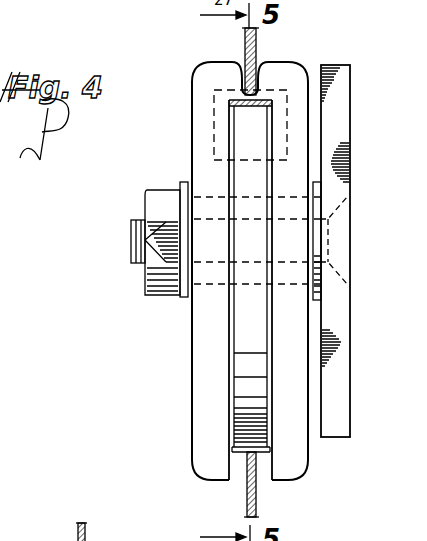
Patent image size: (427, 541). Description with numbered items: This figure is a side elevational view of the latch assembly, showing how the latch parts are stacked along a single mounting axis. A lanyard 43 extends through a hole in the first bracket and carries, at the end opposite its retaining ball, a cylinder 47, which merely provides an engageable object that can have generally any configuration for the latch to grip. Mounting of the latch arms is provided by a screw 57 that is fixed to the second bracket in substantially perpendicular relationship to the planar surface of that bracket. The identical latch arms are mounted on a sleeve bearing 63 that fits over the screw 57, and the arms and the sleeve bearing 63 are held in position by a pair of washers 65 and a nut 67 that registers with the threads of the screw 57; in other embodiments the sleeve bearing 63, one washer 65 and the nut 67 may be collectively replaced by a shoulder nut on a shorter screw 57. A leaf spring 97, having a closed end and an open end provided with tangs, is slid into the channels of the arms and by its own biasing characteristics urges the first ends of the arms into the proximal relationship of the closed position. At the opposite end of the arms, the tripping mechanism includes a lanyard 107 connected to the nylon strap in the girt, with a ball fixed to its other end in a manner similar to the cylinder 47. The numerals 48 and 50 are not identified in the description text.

The lanyard 43 is at (257, 52).
The cylinder 47 is at (214, 107).
The shaft portion 48 is at (121, 531).
The member 50 is at (31, 537).
The screw 57 is at (131, 232).
The sleeve bearing 63 is at (216, 274).
The washers 65 is at (318, 196).
The nut 67 is at (152, 190).
The leaf spring 97 is at (248, 366).
The lanyard 107 is at (257, 492).